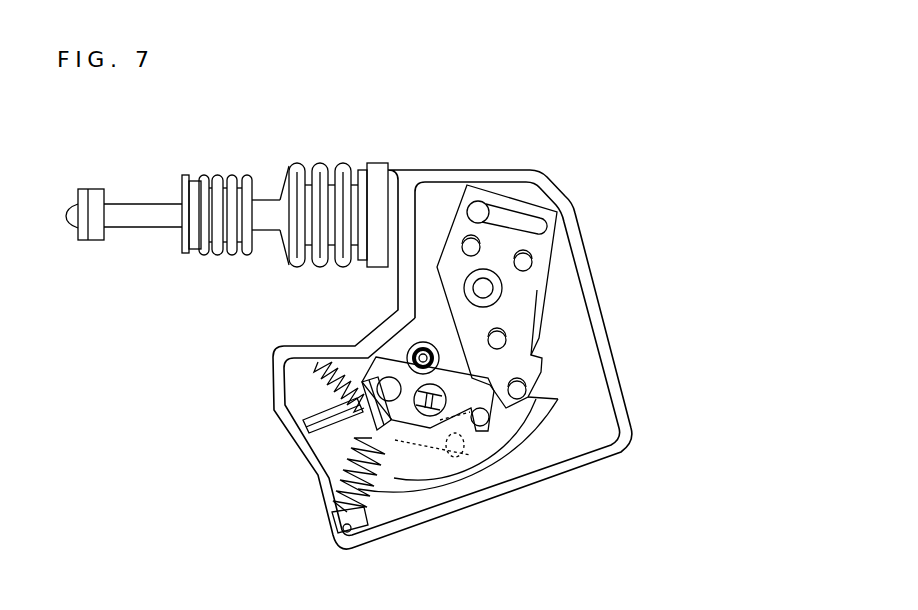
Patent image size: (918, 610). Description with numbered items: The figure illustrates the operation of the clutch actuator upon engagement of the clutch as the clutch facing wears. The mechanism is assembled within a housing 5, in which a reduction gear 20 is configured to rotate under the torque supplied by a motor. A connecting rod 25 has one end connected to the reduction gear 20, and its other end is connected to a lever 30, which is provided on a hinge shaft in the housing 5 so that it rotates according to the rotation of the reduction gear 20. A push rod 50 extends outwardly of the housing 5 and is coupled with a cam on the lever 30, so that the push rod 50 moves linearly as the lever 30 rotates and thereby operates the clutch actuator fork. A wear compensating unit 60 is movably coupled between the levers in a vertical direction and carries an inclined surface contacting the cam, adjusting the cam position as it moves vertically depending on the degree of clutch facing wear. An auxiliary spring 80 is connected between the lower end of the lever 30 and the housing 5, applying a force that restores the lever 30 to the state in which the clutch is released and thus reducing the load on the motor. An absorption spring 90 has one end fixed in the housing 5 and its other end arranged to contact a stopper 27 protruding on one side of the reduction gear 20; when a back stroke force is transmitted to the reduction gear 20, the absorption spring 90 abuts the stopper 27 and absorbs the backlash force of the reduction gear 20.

The housing 5 is at (568, 478).
The push rod 50 is at (133, 210).
The lever 30 is at (523, 207).
The wear compensating unit 60 is at (541, 330).
The reduction gear 20 is at (460, 483).
The connecting rod 25 is at (462, 338).
The stopper 27 is at (325, 427).
The absorption spring 90 is at (318, 370).
The auxiliary spring 80 is at (330, 512).